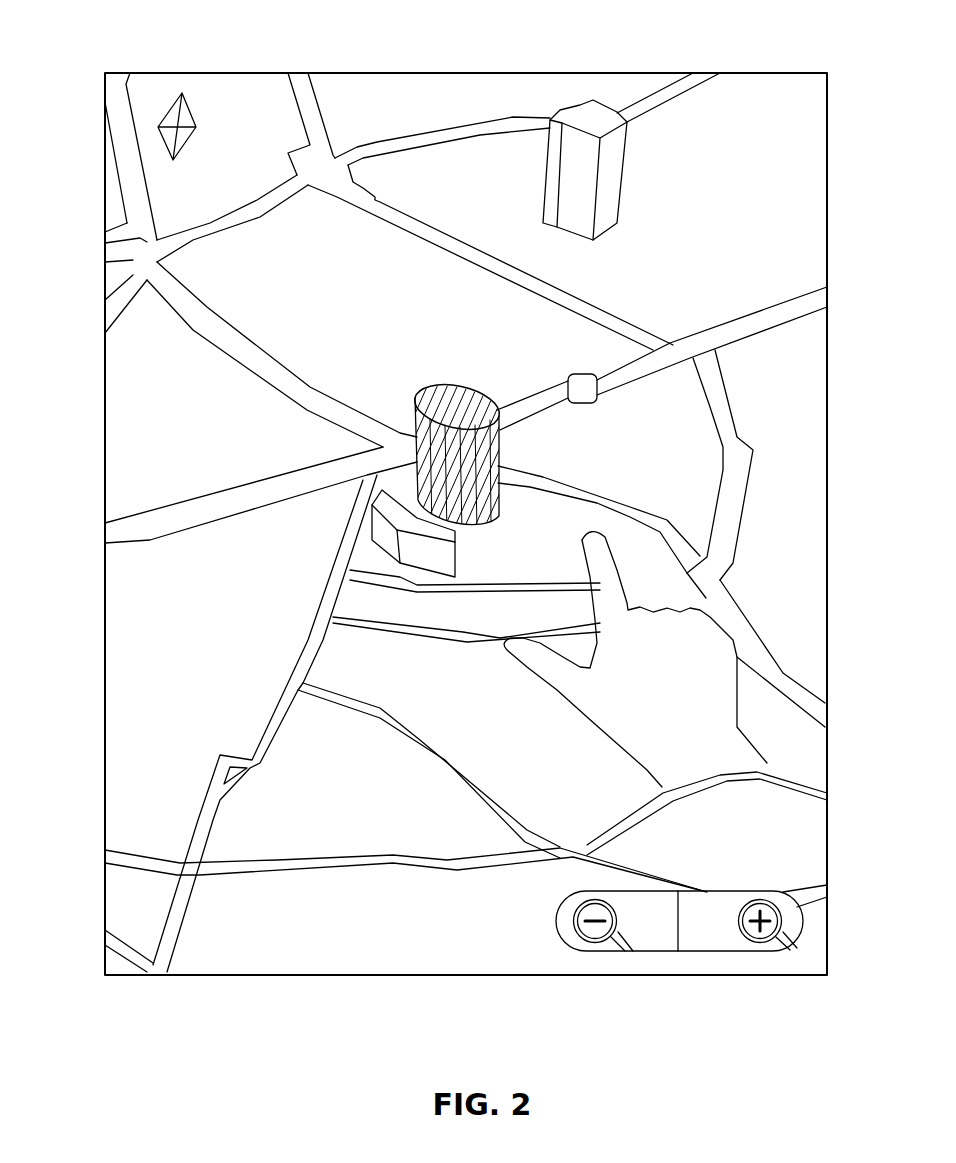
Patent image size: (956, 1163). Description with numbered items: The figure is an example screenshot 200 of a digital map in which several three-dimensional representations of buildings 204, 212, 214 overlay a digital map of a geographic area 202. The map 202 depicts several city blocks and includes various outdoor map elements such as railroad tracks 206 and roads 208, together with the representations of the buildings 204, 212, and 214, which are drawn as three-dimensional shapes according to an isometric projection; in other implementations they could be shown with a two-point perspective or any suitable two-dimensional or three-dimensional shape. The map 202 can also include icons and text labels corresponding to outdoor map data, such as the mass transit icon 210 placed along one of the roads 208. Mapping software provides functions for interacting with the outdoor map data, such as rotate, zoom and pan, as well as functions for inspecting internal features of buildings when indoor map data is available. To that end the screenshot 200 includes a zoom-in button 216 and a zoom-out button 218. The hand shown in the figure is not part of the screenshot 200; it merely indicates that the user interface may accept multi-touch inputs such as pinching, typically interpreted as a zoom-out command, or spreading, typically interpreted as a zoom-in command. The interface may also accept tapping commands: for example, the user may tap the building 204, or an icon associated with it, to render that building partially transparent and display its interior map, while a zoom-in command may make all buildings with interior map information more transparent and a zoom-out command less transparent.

The screenshot 200 is at (423, 36).
The digital map of a geographic area 202 is at (120, 137).
The 3D representation of a building 204 is at (447, 382).
The railroad tracks 206 is at (303, 467).
The roads 208 is at (590, 298).
The mass transit icon 210 is at (576, 375).
The 3D representation of a building 212 is at (578, 112).
The 3D representation of a building 214 is at (372, 541).
The zoom-in button 216 is at (757, 945).
The zoom-out button 218 is at (596, 945).